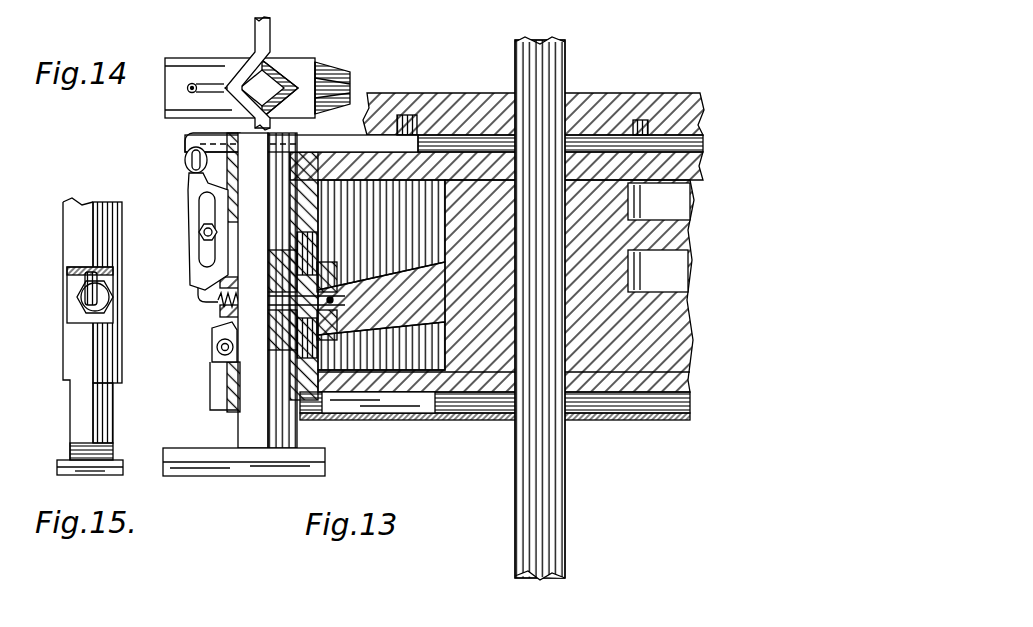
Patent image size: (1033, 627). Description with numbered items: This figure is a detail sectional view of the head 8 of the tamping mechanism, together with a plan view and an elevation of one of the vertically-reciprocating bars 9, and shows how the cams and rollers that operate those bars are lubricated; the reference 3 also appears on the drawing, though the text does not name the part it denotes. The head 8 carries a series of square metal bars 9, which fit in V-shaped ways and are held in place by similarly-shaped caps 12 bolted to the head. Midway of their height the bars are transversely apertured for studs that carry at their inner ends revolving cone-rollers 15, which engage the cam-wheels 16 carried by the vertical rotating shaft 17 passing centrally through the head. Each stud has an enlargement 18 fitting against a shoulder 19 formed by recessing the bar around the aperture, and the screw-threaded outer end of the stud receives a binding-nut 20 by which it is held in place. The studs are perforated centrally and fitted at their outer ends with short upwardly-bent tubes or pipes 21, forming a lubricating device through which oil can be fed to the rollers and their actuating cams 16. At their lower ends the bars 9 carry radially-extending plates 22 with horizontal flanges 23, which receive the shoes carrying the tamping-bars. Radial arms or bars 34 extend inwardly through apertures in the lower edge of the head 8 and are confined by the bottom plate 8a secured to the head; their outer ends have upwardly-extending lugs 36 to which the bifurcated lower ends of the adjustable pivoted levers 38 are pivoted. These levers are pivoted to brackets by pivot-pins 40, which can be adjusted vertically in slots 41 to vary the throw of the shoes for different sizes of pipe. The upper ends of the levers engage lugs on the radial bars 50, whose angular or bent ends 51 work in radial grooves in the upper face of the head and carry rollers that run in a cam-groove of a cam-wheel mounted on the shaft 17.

In FIG. 13, the spindle sleeve 3 is at (328, 258).
In FIG. 13, the head 8 is at (634, 420).
In FIG. 13, the bottom plate 8a is at (453, 419).
In FIG. 14, the vertically-reciprocating bars 9 is at (261, 89).
In FIG. 15, the vertically-reciprocating bars 9 is at (33, 373).
In FIG. 13, the vertically-reciprocating bars 9 is at (244, 304).
In FIG. 14, the caps 12 is at (255, 36).
In FIG. 14, the cone-rollers 15 is at (332, 77).
In FIG. 13, the cone-rollers 15 is at (381, 302).
In FIG. 13, the cam-wheels 16 is at (404, 275).
In FIG. 13, the shaft 17 is at (555, 424).
In FIG. 13, the enlargements 18 is at (267, 249).
In FIG. 13, the shoulders 19 is at (240, 352).
In FIG. 15, the binding-nuts 20 is at (82, 302).
In FIG. 13, the binding-nuts 20 is at (222, 315).
In FIG. 14, the tubes or pipes 21 is at (188, 91).
In FIG. 15, the tubes or pipes 21 is at (92, 288).
In FIG. 13, the tubes or pipes 21 is at (198, 292).
In FIG. 15, the radially-extending plates 22 is at (80, 450).
In FIG. 13, the radially-extending plates 22 is at (265, 455).
In FIG. 15, the horizontal flanges 23 is at (113, 468).
In FIG. 13, the horizontal flanges 23 is at (203, 460).
In FIG. 13, the radial arms or bars 34 is at (363, 403).
In FIG. 13, the upwardly-extending lugs 36 is at (207, 366).
In FIG. 13, the adjustable pivoted levers 38 is at (198, 260).
In FIG. 13, the pivot-pins 40 is at (199, 233).
In FIG. 13, the slots 41 is at (197, 217).
In FIG. 13, the radial bars 50 is at (444, 136).
In FIG. 13, the angular or bent ends 51 is at (412, 120).